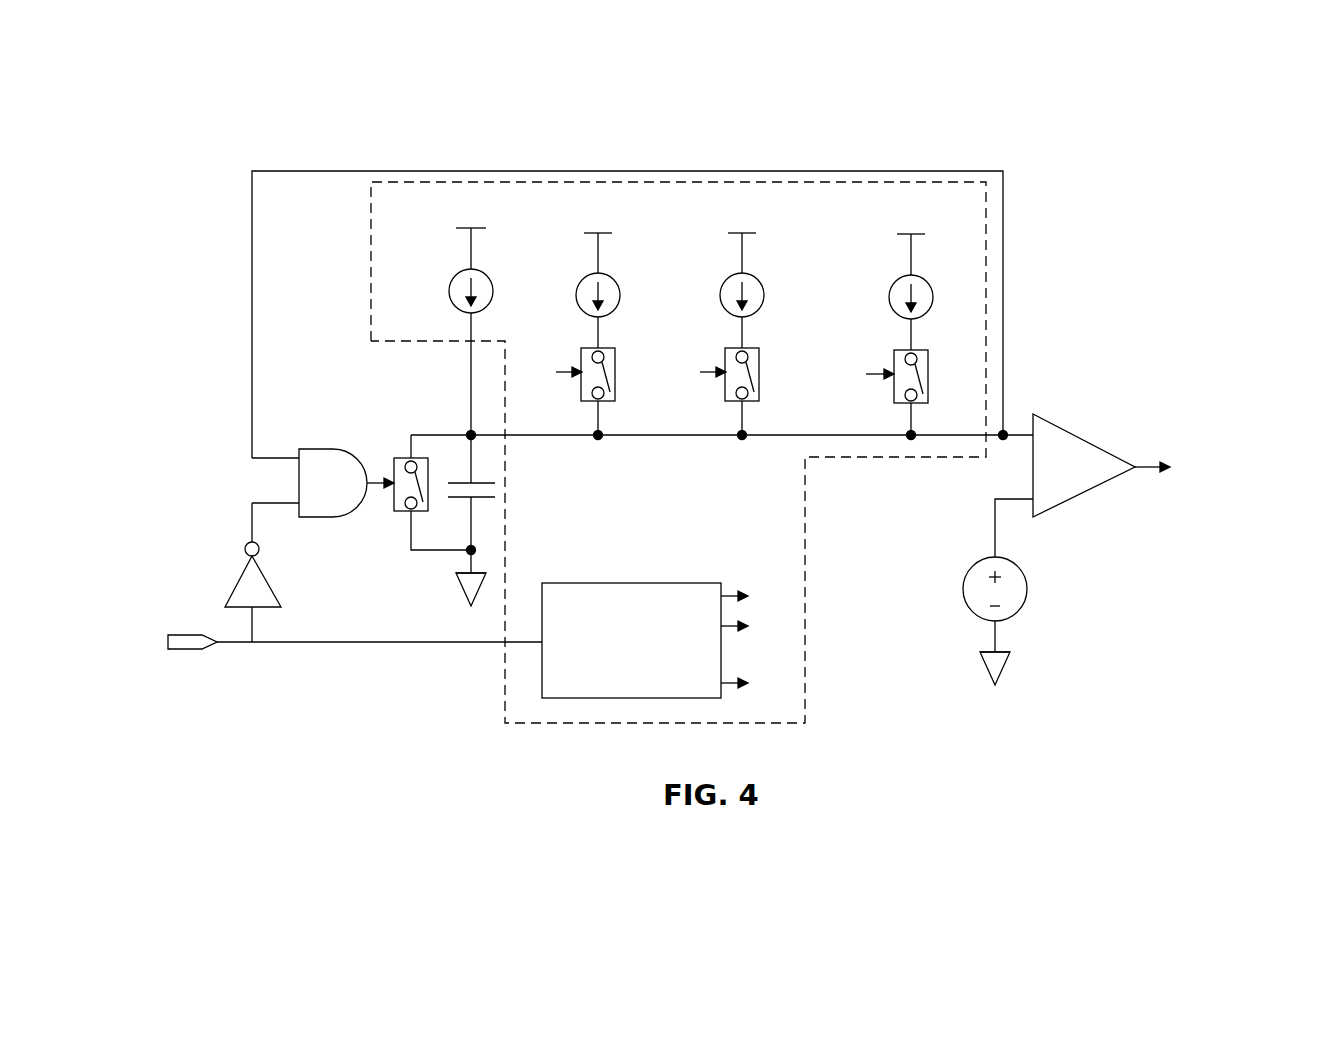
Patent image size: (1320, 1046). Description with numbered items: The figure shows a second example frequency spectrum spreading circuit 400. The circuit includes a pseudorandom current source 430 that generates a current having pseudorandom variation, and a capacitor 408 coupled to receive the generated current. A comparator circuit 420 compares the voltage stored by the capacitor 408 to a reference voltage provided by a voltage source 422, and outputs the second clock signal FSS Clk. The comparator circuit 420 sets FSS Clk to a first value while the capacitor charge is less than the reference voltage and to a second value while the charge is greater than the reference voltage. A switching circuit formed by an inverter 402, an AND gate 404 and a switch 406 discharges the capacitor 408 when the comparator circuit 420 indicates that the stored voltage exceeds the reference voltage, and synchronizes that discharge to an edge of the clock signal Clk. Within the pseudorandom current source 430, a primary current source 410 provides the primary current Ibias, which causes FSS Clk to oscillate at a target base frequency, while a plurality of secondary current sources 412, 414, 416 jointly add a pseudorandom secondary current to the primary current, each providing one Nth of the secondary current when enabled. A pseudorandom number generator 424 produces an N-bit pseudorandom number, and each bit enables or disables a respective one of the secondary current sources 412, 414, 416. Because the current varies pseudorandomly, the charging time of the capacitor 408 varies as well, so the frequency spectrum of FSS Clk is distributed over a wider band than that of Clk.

The frequency spectrum spreading circuit 400 is at (1273, 79).
The inverter of switching circuit 402 is at (275, 590).
The AND gate of switching circuit 404 is at (333, 449).
The switch of switching circuit 406 is at (400, 468).
The capacitor 408 is at (485, 488).
The primary current source 410 is at (490, 275).
The secondary current source 412 is at (617, 279).
The secondary current source 414 is at (761, 279).
The secondary current source 416 is at (932, 287).
The comparator circuit 420 is at (1093, 446).
The voltage source 422 is at (965, 575).
The pseudorandom number generator 424 is at (676, 583).
The pseudorandom current source 430 is at (369, 295).